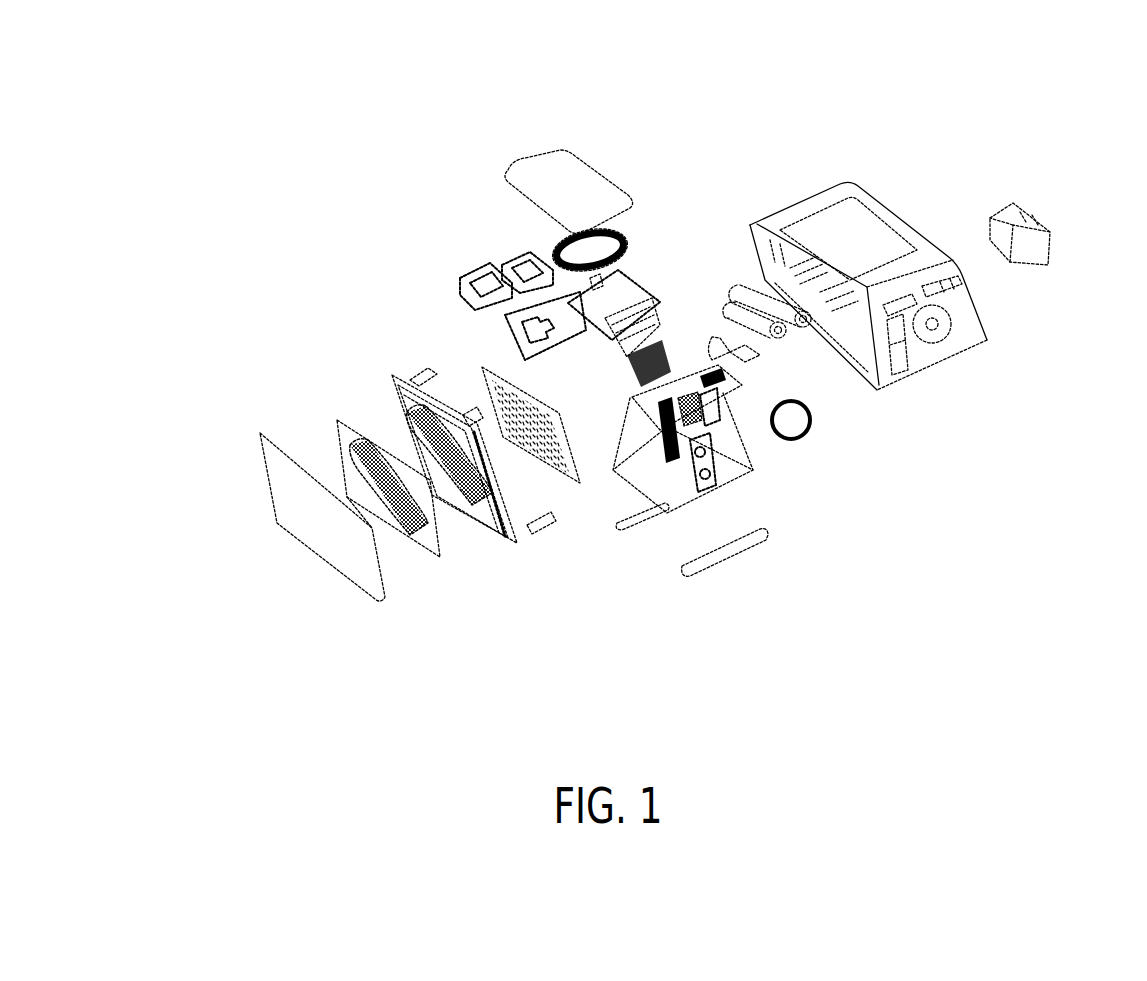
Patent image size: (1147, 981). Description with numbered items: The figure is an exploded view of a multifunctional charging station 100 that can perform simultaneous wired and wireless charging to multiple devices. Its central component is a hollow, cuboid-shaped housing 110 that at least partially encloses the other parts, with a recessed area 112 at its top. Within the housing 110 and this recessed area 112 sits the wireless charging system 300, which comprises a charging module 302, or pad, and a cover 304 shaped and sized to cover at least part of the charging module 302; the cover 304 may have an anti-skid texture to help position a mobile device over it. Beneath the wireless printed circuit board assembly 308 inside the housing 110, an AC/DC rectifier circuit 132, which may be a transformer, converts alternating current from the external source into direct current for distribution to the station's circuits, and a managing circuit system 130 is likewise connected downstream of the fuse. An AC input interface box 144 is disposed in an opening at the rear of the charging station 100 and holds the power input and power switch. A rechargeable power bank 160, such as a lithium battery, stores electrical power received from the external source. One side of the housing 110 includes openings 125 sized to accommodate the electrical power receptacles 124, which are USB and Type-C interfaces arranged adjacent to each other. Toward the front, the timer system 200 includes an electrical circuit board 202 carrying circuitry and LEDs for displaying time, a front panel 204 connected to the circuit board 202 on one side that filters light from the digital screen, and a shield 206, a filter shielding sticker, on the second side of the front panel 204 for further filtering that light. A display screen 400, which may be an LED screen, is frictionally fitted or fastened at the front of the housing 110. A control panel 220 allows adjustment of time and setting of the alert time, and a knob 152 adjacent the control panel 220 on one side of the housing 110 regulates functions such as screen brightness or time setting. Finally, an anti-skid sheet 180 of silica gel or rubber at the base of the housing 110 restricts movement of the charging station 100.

The charging station 100 is at (226, 86).
The housing 110 is at (907, 213).
The recessed area 112 is at (828, 232).
The electrical power receptacle 124 is at (505, 258).
The openings 125 is at (953, 293).
The managing circuit system 130 is at (688, 382).
The AC/DC rectifier circuit 132 is at (615, 332).
The AC input interface box 144 is at (1047, 237).
The knob 152 is at (798, 430).
The power bank 160 is at (807, 337).
The anti-skid sheet 180 is at (722, 552).
The timer system 200 is at (344, 370).
The electrical circuit board 202 is at (493, 377).
The front panel 204 is at (484, 492).
The shield 206 is at (340, 443).
The control panel 220 is at (684, 490).
The wireless charging system 300 is at (652, 180).
The charging module 302 is at (627, 242).
The cover 304 is at (563, 175).
The wireless printed circuit board assembly 308 is at (640, 303).
The display screen 400 is at (366, 550).